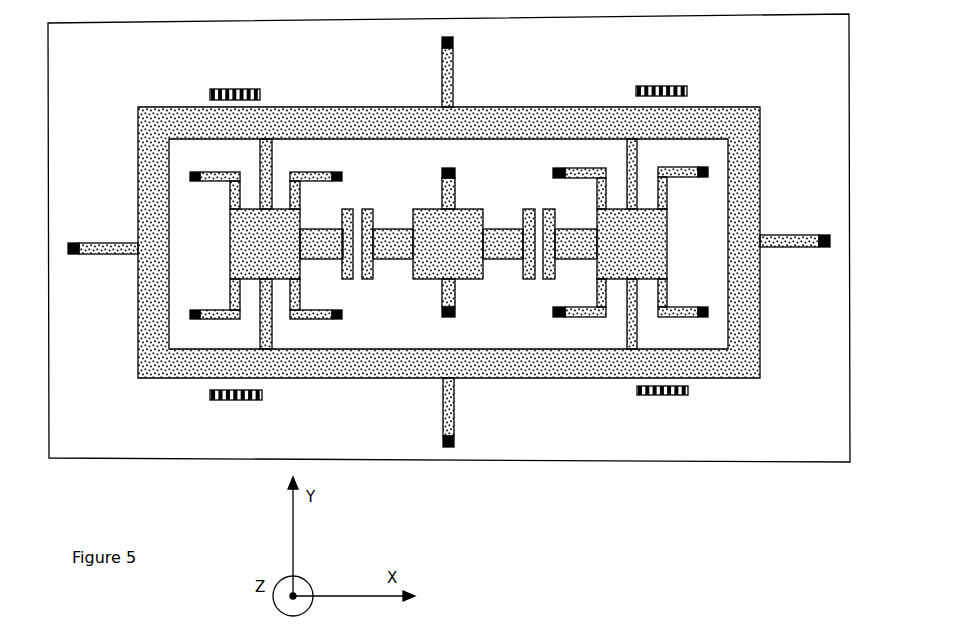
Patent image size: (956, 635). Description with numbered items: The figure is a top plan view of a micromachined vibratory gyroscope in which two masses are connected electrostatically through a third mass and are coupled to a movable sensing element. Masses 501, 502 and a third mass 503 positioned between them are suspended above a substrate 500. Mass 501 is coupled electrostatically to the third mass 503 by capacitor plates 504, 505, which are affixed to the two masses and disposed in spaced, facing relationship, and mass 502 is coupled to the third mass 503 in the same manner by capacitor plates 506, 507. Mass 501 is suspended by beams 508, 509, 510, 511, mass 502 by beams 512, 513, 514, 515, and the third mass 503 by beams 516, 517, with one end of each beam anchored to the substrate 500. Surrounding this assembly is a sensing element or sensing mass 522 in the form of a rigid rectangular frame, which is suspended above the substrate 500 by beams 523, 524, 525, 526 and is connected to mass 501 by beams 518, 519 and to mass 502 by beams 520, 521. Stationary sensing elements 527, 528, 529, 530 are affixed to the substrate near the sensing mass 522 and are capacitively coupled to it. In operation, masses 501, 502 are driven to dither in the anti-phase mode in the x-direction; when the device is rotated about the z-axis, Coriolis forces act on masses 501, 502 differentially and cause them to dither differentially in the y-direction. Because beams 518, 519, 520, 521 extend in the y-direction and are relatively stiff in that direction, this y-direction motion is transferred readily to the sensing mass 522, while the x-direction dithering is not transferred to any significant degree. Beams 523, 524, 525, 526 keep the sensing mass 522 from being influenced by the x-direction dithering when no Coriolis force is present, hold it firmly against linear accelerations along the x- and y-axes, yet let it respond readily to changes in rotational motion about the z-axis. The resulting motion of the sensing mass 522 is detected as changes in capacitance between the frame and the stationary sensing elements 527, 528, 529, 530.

The substrate 500 is at (449, 238).
The mass 501 is at (258, 252).
The mass 502 is at (637, 237).
The third mass 503 is at (433, 228).
The capacitor plate 504 is at (348, 256).
The capacitor plate 505 is at (378, 253).
The capacitor plate 506 is at (523, 247).
The capacitor plate 507 is at (557, 252).
The beam 508 is at (228, 183).
The beam 509 is at (295, 172).
The beam 510 is at (212, 310).
The beam 511 is at (295, 318).
The beam 512 is at (605, 168).
The beam 513 is at (668, 187).
The beam 514 is at (605, 317).
The beam 515 is at (668, 293).
The beam 516 is at (455, 192).
The beam 517 is at (455, 298).
The beam 518 is at (260, 153).
The beam 519 is at (260, 330).
The beam 520 is at (638, 147).
The beam 521 is at (638, 330).
The sensing mass 522 is at (412, 121).
The beam 523 is at (120, 242).
The beam 524 is at (455, 68).
The beam 525 is at (789, 235).
The beam 526 is at (455, 398).
The stationary sensing element 527 is at (240, 89).
The stationary sensing element 528 is at (657, 86).
The stationary sensing element 529 is at (240, 400).
The stationary sensing element 530 is at (657, 396).